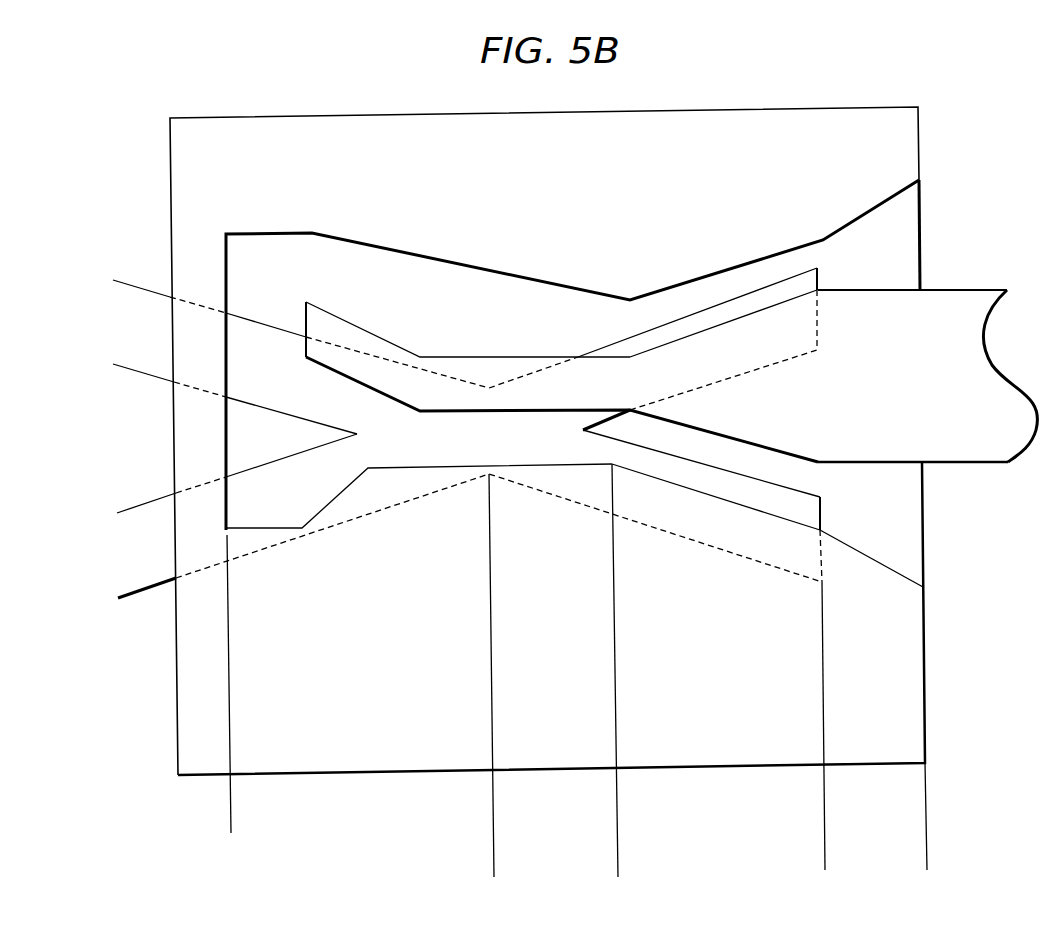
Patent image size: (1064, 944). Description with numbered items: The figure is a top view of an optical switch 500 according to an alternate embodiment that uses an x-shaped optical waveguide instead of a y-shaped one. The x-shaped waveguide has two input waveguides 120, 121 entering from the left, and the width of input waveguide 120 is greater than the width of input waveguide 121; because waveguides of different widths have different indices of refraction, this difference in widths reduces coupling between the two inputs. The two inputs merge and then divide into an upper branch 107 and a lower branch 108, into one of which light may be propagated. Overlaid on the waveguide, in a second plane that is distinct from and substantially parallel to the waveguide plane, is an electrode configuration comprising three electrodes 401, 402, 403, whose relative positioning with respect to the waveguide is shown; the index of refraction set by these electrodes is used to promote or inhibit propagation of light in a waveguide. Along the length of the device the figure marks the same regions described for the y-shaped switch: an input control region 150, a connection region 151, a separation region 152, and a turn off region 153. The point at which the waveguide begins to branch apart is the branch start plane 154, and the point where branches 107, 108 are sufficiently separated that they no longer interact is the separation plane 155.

The optical switch 500 is at (112, 453).
The electrode 401 is at (608, 191).
The electrode 402 is at (937, 380).
The electrode 403 is at (537, 649).
The upper branch 107 is at (748, 360).
The lower branch 108 is at (752, 543).
The input waveguide 120 is at (161, 350).
The input waveguide 121 is at (166, 564).
The branch start plane 154 is at (491, 665).
The separation plane 155 is at (824, 720).
The input control region 150 is at (231, 813).
The connection region 151 is at (556, 818).
The separation region 152 is at (824, 803).
The turn off region 153 is at (975, 802).